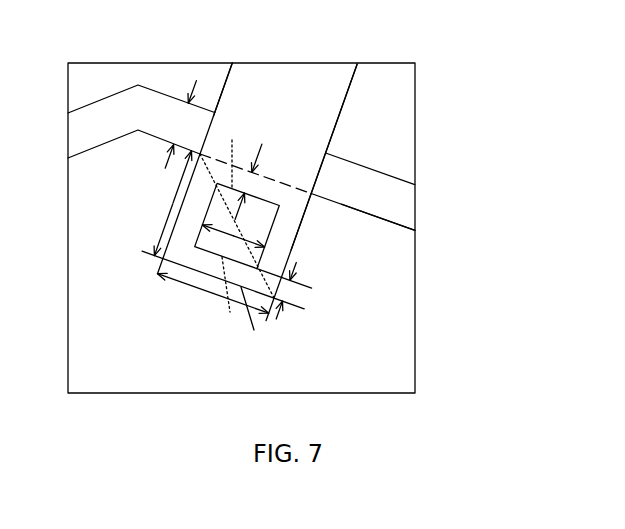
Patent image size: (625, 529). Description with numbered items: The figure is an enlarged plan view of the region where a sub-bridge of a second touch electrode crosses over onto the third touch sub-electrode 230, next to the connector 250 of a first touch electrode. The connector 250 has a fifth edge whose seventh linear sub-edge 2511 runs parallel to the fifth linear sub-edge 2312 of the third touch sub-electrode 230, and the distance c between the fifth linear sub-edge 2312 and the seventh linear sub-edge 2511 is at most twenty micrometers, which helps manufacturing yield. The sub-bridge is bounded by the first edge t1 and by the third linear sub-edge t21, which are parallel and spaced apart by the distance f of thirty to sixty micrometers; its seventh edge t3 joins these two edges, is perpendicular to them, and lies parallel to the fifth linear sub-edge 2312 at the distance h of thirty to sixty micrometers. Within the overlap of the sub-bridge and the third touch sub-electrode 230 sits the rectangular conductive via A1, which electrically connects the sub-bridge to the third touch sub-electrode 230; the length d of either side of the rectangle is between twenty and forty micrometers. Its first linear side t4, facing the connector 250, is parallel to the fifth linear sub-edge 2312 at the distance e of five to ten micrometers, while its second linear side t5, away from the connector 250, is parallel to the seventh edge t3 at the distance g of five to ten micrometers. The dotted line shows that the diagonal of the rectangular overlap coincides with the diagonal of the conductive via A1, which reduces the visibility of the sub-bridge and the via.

The third touch sub-electrode 230 is at (405, 378).
The connector 250 is at (405, 137).
The seventh linear sub-edge 2511 is at (388, 174).
The fifth linear sub-edge 2312 is at (368, 214).
The first edge t1 is at (222, 94).
The third linear sub-edge t21 is at (343, 100).
The conductive via A1 is at (258, 218).
The distance between seventh edge and fifth linear sub-edge h is at (173, 203).
The distance between fifth linear sub-edge and seventh linear sub-edge c is at (180, 125).
The distance between first linear side and fifth linear sub-edge e is at (248, 181).
The length of side of rectangle d is at (233, 243).
The distance between second linear side and seventh edge g is at (288, 291).
The distance between first linear sub-edge and third linear sub-edge f is at (213, 293).
The first linear side t4 is at (238, 153).
The second linear side t5 is at (235, 298).
The seventh edge t3 is at (260, 320).